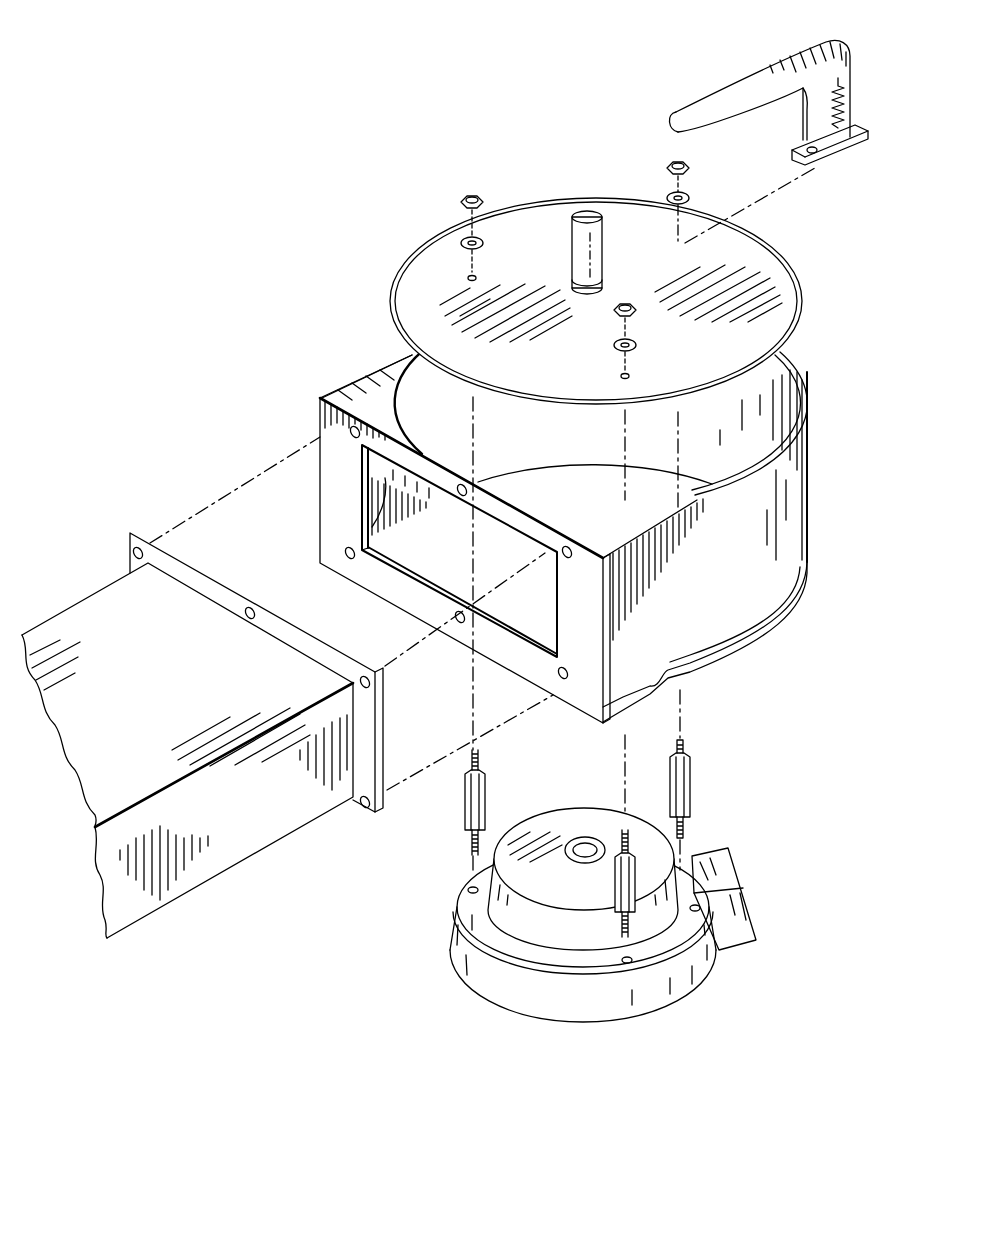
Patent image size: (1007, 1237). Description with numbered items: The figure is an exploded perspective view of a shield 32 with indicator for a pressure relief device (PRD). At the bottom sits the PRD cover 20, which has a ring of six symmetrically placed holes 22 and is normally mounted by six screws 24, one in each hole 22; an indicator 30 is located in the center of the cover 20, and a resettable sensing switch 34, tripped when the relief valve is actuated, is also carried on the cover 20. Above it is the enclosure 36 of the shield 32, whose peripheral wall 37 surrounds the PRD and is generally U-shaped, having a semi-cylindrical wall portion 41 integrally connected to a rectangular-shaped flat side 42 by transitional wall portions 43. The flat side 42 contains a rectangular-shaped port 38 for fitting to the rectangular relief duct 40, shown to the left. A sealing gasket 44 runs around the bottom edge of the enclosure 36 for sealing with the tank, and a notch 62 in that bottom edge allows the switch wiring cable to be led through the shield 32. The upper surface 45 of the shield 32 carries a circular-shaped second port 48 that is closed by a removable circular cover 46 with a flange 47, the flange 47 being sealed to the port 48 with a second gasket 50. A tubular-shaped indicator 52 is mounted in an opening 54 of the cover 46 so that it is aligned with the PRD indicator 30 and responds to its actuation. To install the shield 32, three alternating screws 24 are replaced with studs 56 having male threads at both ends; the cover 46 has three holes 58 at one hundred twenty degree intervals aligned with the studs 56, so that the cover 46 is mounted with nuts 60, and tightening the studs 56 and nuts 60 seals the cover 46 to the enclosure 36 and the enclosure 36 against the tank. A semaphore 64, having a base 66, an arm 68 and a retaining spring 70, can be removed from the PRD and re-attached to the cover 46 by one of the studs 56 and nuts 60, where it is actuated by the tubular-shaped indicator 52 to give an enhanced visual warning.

The PRD cover 20 is at (703, 845).
The holes 22 is at (627, 962).
The screws 24 is at (510, 948).
The indicator 30 is at (585, 848).
The shield 32 is at (358, 335).
The resettable sensing switch 34 is at (748, 900).
The enclosure 36 is at (812, 487).
The peripheral wall 37 is at (792, 535).
The port 38 is at (430, 571).
The relief duct 40 is at (98, 603).
The semi-cylindrical wall portion 41 is at (808, 453).
The flat side 42 is at (332, 483).
The transitional wall portions 43 is at (695, 620).
The sealing gasket 44 is at (807, 592).
The upper surface 45 is at (347, 388).
The removable circular cover 46 is at (750, 257).
The flange 47 is at (405, 273).
The second port 48 is at (782, 419).
The second gasket 50 is at (772, 366).
The tubular-shaped indicator 52 is at (590, 220).
The opening 54 is at (580, 287).
The studs 56 is at (470, 806).
The holes 58 is at (683, 243).
The nuts 60 is at (462, 195).
The notch 62 is at (665, 683).
The semaphore 64 is at (715, 70).
The base 66 is at (866, 132).
The arm 68 is at (800, 58).
The retaining spring 70 is at (842, 107).